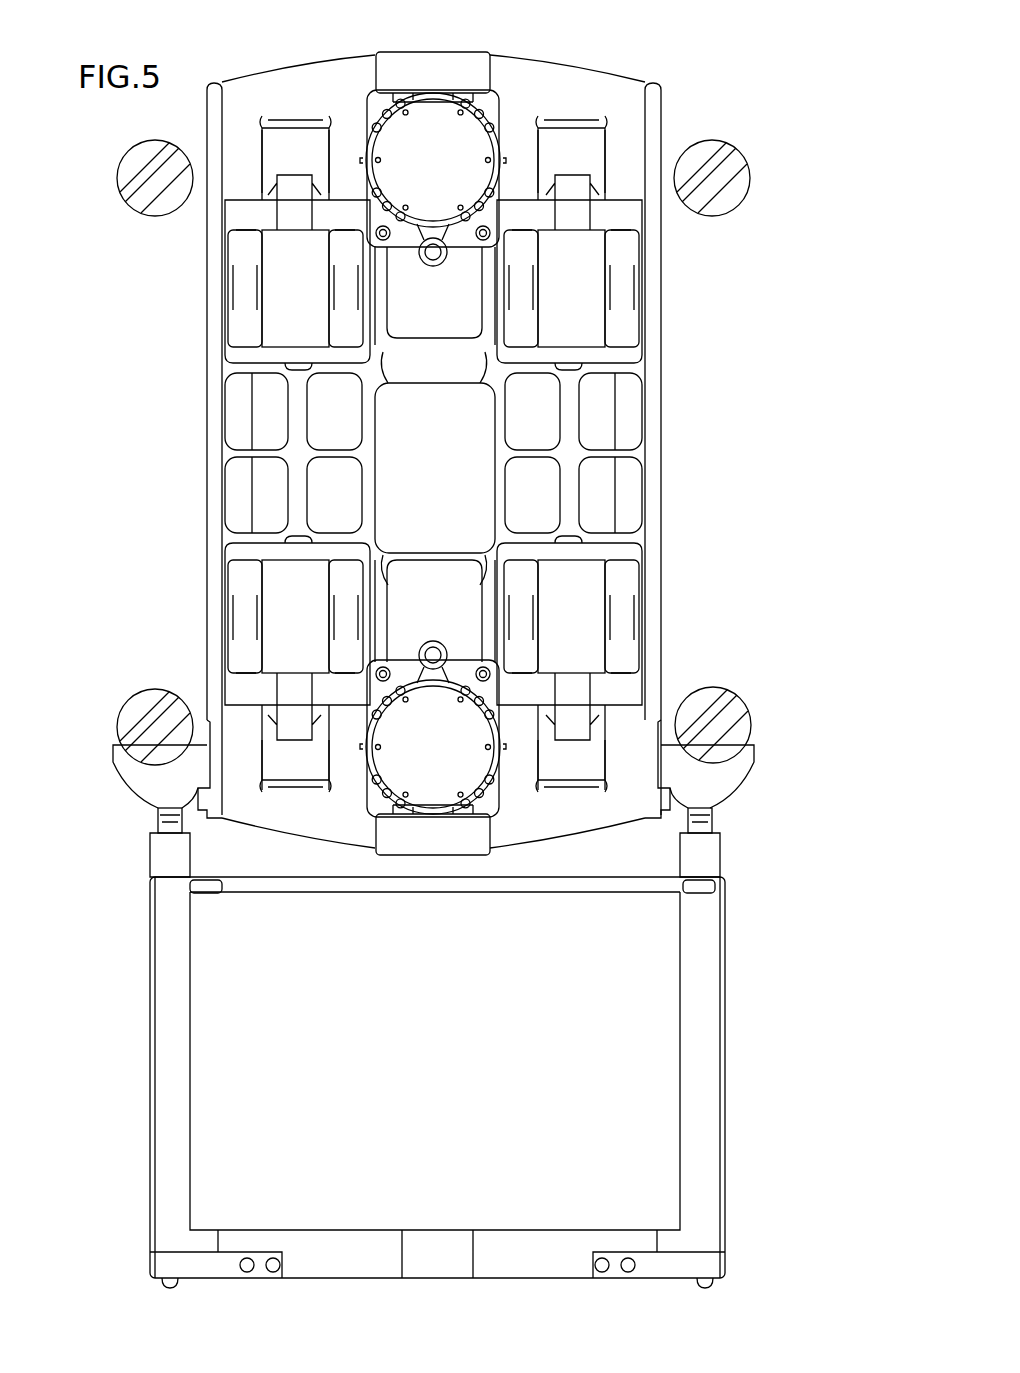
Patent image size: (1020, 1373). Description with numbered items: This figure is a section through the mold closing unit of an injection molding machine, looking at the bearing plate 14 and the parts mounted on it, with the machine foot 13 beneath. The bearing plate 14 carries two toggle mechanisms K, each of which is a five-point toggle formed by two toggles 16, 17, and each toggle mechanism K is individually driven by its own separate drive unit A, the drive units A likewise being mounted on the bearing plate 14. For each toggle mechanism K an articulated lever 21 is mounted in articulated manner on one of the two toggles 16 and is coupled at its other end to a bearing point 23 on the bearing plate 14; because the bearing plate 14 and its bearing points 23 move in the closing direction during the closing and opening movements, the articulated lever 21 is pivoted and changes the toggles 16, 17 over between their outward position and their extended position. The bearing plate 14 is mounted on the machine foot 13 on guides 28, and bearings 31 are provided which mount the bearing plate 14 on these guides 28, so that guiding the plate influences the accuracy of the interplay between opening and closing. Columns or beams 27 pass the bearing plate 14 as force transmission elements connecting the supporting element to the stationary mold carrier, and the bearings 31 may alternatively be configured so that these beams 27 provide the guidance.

The machine foot 13 is at (775, 930).
The bearing plate 14 is at (625, 92).
The toggle 16 is at (313, 309).
The toggle 17 is at (330, 253).
The articulated lever 21 is at (292, 178).
The bearing point 23 is at (298, 140).
The beam 27 is at (726, 736).
The guide 28 is at (150, 838).
The bearing 31 is at (150, 778).
The toggle mechanism K is at (222, 327).
The drive unit A is at (440, 189).